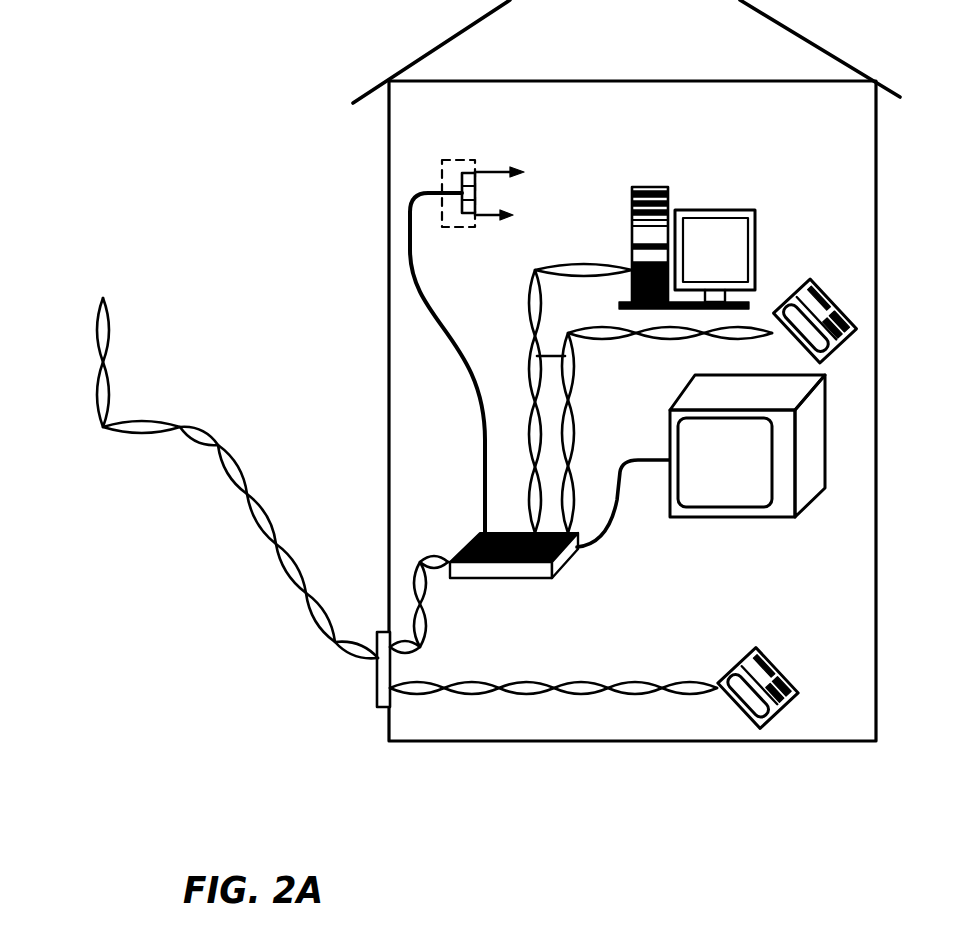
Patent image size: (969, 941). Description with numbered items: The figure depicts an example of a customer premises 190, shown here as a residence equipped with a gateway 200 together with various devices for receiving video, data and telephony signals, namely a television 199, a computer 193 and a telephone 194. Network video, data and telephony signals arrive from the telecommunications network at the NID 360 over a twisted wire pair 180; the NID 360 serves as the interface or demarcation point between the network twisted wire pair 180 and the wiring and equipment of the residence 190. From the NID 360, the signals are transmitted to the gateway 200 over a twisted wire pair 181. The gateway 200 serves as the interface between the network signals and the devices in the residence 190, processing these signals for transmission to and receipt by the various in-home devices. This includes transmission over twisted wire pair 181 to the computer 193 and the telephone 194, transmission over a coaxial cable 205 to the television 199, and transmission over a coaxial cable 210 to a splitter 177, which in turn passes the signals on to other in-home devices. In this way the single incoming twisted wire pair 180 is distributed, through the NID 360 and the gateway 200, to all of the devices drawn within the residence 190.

The splitter 177 is at (446, 156).
The twisted wire pair 180 is at (99, 362).
The twisted wire pair 181 is at (541, 356).
The customer premises 190 is at (778, 742).
The computer 193 is at (668, 187).
The telephone 194 is at (828, 292).
The television 199 is at (690, 518).
The gateway 200 is at (545, 578).
The coaxial cable 205 is at (624, 470).
The coaxial cable 210 is at (481, 435).
The NID 360 is at (380, 707).